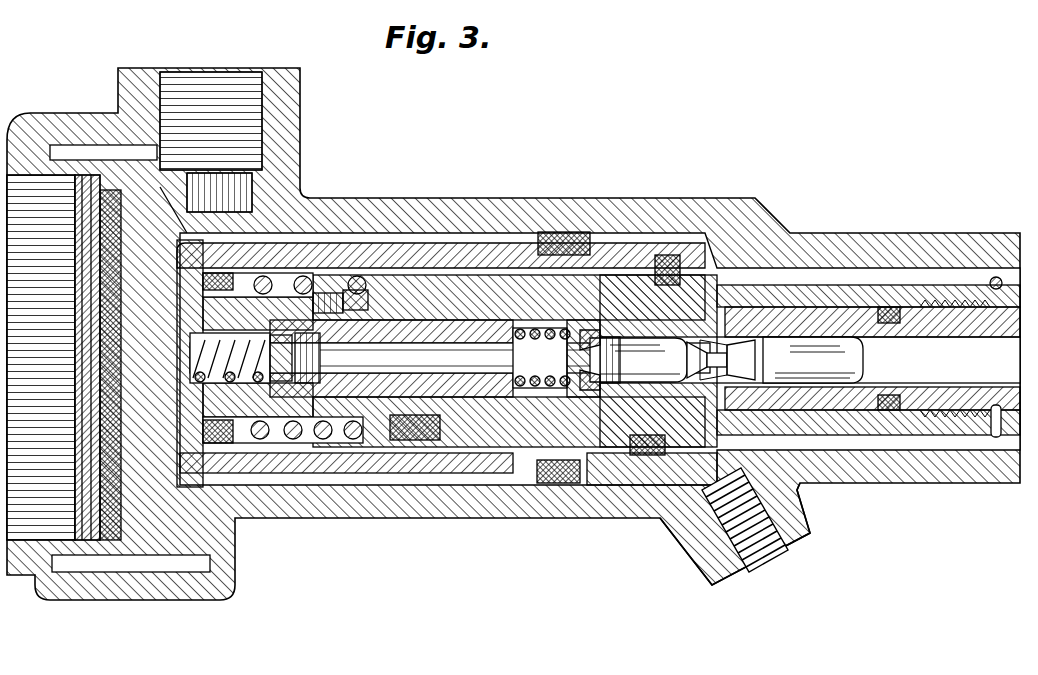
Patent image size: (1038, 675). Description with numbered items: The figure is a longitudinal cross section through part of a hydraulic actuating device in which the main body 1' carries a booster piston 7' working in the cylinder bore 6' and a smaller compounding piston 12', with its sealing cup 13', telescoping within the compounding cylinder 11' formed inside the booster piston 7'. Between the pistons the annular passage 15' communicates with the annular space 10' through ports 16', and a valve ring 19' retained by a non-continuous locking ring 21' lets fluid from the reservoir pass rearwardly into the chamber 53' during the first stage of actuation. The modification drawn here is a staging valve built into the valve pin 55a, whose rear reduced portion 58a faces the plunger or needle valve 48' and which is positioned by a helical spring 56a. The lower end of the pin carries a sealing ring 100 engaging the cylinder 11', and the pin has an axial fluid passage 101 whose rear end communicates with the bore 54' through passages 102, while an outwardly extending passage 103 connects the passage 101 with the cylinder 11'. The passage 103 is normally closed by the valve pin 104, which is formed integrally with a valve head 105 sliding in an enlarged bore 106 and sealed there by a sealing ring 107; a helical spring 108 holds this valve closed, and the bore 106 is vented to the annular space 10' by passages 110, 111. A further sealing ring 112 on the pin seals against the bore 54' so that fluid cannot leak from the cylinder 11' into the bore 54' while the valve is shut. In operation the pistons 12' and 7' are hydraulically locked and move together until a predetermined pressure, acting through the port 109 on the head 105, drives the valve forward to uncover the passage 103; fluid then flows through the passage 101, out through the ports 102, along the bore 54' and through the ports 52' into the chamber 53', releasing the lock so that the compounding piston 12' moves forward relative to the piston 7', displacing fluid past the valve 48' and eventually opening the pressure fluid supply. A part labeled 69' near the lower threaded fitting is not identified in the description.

The main body 1' is at (513, 334).
The sealing ring 100 is at (200, 338).
The helical spring 108 is at (250, 300).
The compounding cylinder 11' is at (437, 237).
The enlarged bore 106 is at (330, 290).
The sealing ring 107 is at (355, 312).
The port 109 is at (400, 318).
The outwardly extending passage 103 is at (430, 350).
The valve pin 104 is at (470, 330).
The sealing ring 112 is at (520, 345).
The axial fluid passage 101 is at (560, 300).
The passages 102 is at (595, 275).
The bore 54' is at (600, 360).
The valve head 105 is at (90, 352).
The passage 110 is at (175, 410).
The passage 111 is at (175, 463).
The valve pin 55a is at (268, 440).
The helical spring 56a is at (318, 430).
The annular space 10' is at (277, 448).
The sealing cup 13' is at (566, 448).
The compounding piston 12' is at (415, 489).
The ports 16' is at (460, 473).
The booster piston 7' is at (400, 468).
The reduced portion 58a is at (575, 400).
The needle valve 48' is at (584, 450).
The cylinder bore 6' is at (671, 451).
The annular passage 15' is at (556, 458).
The valve ring 19' is at (580, 478).
The locking ring 21' is at (660, 463).
The threaded stem 69' is at (704, 520).
The ports 52' is at (744, 534).
The chamber 53' is at (868, 486).